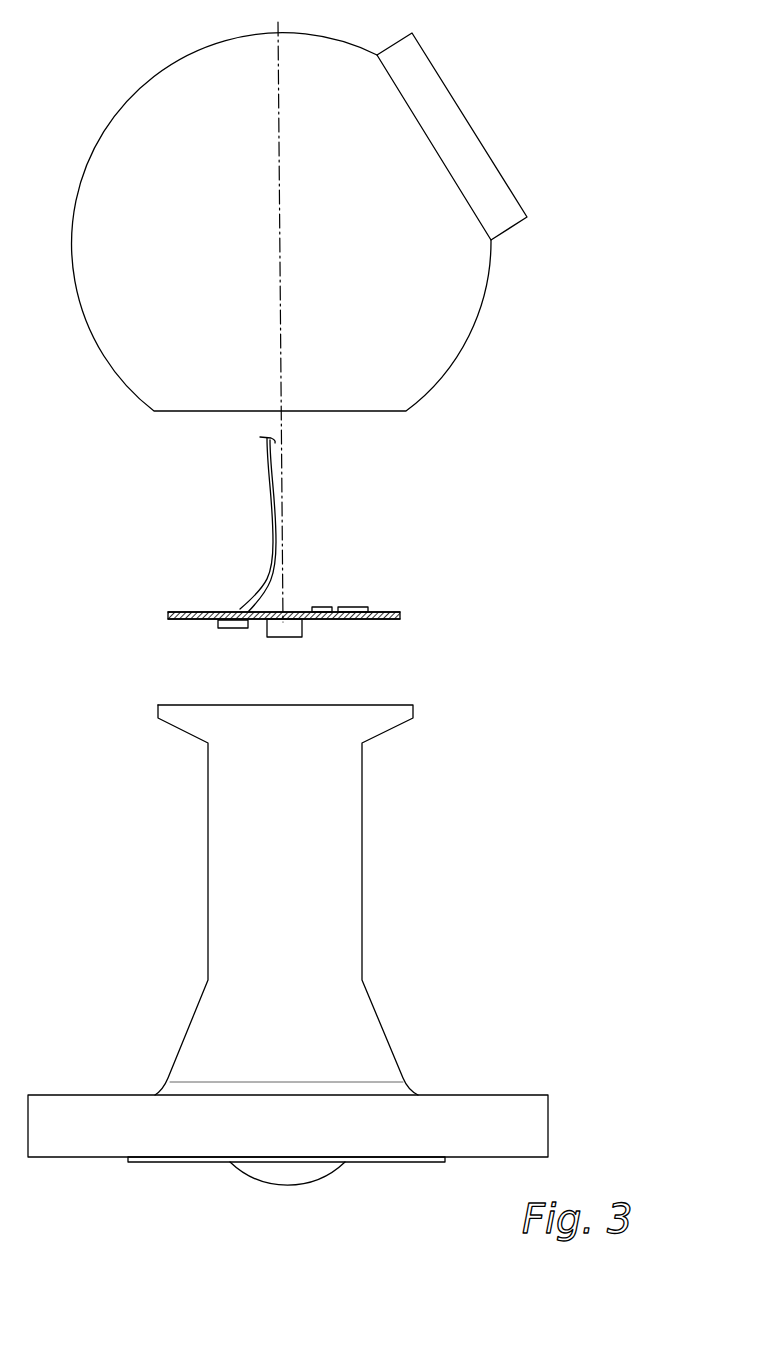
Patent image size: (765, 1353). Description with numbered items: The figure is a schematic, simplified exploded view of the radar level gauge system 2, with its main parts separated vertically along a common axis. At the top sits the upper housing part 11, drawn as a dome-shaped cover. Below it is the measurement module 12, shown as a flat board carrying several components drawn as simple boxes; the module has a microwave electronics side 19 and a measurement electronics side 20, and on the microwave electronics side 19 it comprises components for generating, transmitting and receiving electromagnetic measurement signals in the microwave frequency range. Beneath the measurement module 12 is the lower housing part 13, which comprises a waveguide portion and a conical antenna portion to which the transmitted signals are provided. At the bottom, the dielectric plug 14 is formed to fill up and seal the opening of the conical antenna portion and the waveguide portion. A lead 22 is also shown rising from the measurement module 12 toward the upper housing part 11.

The radar level gauge system 2 is at (536, 419).
The upper housing part 11 is at (121, 110).
The measurement module 12 is at (387, 612).
The lower housing part 13 is at (405, 748).
The dielectric plug 14 is at (310, 1167).
The microwave electronics side 19 is at (196, 626).
The measurement electronics side 20 is at (206, 598).
The wire / lead 22 is at (270, 588).